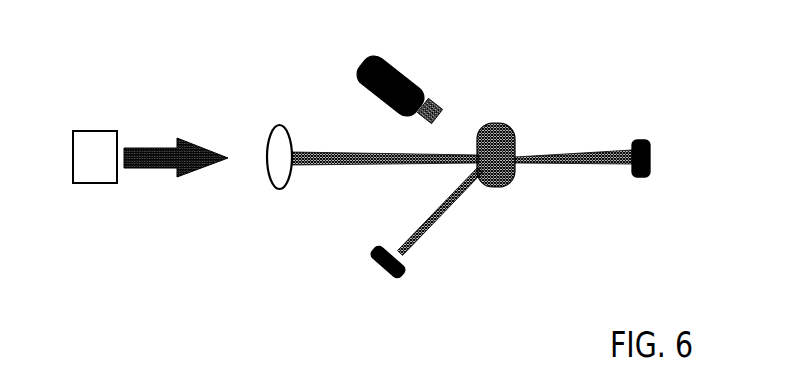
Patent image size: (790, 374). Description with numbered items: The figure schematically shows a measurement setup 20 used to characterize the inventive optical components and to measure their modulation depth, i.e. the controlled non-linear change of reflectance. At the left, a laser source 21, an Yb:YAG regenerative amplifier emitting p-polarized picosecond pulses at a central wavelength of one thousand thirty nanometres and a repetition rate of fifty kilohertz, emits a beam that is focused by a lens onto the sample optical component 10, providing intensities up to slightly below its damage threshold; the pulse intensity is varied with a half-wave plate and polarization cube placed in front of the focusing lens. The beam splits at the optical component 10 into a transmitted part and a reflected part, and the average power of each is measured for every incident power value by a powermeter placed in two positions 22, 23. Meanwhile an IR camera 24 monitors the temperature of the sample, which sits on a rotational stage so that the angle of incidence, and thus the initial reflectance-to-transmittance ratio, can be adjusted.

The measurement setup 20 is at (575, 83).
The laser source 21 is at (80, 184).
The optical component 10 is at (512, 179).
The powermeter position (reflected beam) 22 is at (377, 264).
The powermeter position (transmitted beam) 23 is at (651, 152).
The IR camera 24 is at (405, 70).